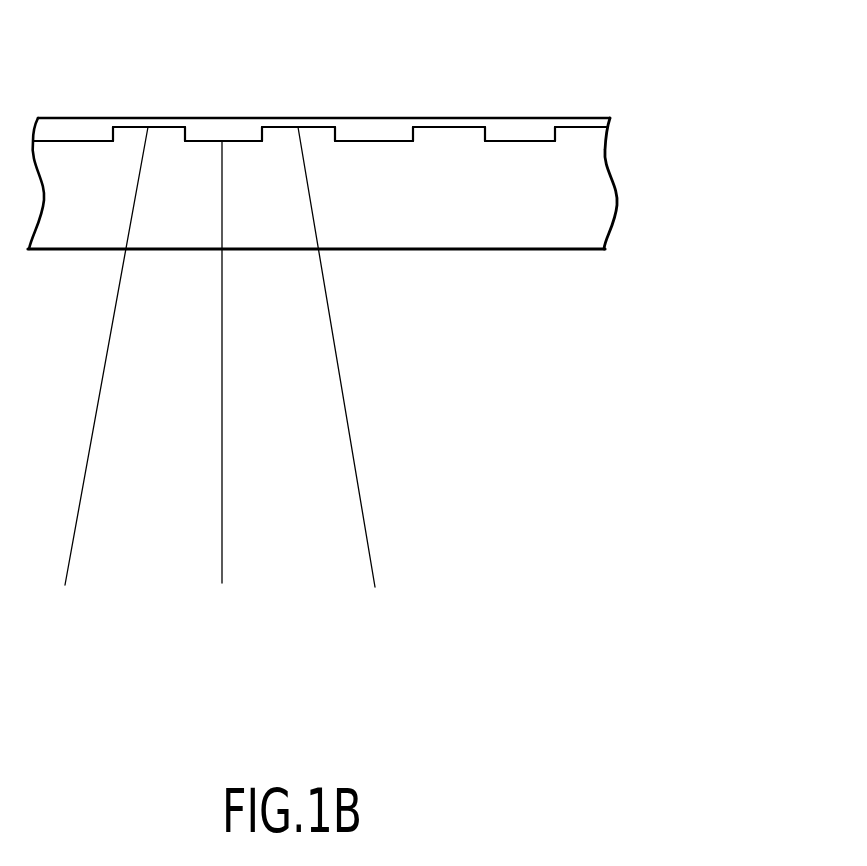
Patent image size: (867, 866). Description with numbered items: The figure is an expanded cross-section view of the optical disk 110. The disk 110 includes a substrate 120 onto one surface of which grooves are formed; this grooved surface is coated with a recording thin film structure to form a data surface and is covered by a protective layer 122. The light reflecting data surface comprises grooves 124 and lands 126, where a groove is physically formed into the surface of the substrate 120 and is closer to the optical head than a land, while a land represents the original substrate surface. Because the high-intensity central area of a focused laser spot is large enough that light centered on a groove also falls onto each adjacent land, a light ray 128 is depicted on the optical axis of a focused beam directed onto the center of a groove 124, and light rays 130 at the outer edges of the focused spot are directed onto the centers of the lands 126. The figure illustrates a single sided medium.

The optical disk 110 is at (528, 120).
The substrate 120 is at (498, 238).
The protective layer 122 is at (375, 133).
The grooves 124 is at (378, 142).
The lands 126 is at (448, 128).
The light ray 128 is at (222, 568).
The light rays 130 is at (70, 555).